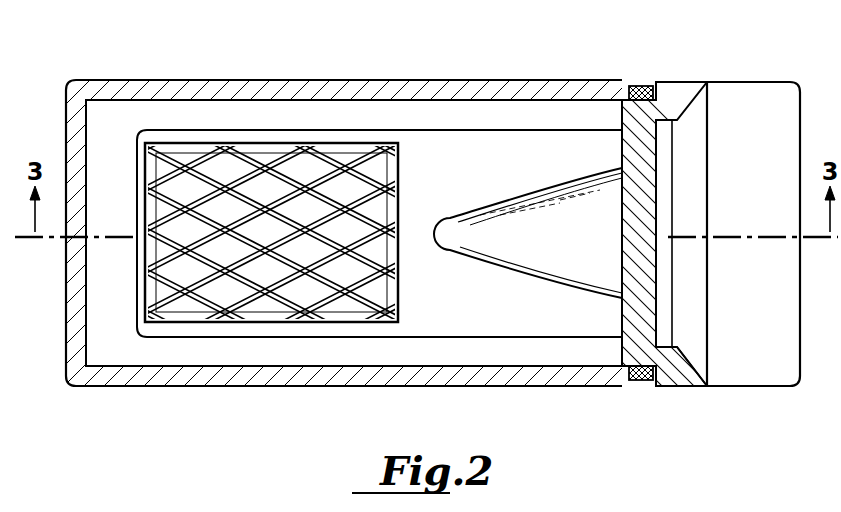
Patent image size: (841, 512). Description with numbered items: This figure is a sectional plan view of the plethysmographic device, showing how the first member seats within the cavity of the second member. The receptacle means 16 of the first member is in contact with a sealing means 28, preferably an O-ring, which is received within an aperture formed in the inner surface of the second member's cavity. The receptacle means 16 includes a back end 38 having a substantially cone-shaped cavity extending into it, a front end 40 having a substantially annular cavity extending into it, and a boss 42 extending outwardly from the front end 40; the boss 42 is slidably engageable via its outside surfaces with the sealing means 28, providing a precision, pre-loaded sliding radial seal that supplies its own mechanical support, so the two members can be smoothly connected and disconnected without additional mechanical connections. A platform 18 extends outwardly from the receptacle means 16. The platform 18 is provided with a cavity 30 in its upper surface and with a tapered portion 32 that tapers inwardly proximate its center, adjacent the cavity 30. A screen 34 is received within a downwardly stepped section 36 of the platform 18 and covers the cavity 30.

The receptacle means 16 is at (707, 83).
The platform 18 is at (464, 155).
The sealing means 28 is at (641, 91).
The cavity 30 is at (210, 230).
The tapered portion 32 is at (563, 266).
The screen 34 is at (243, 293).
The downwardly stepped section 36 is at (153, 256).
The back end 38 is at (710, 373).
The front end 40 is at (665, 382).
The boss 42 is at (630, 127).